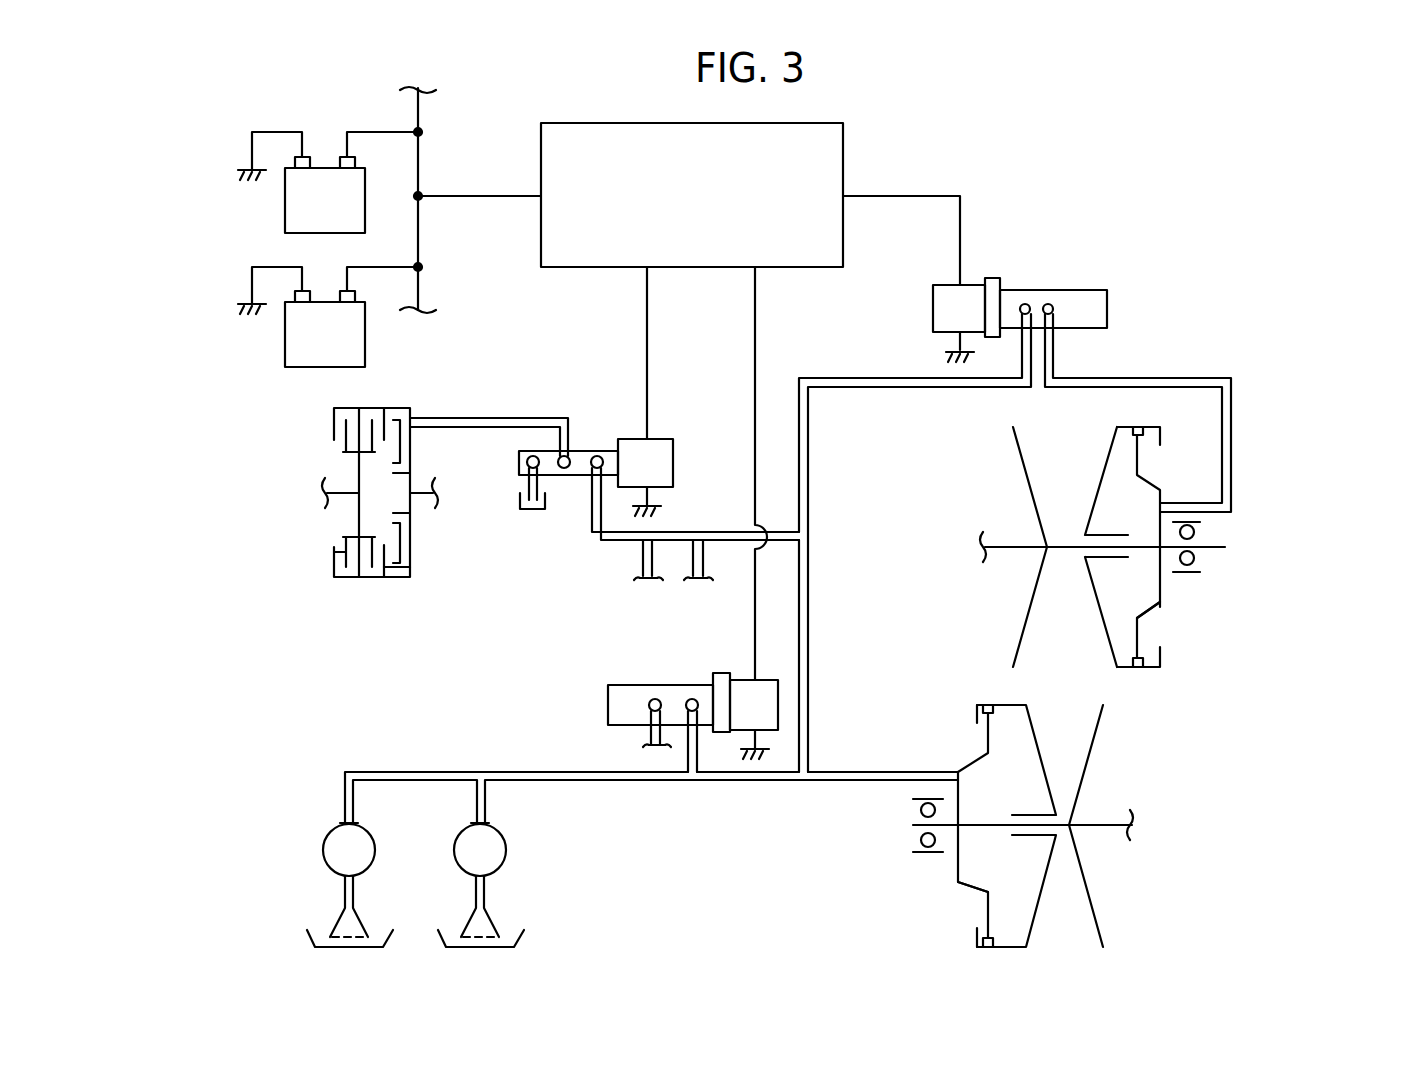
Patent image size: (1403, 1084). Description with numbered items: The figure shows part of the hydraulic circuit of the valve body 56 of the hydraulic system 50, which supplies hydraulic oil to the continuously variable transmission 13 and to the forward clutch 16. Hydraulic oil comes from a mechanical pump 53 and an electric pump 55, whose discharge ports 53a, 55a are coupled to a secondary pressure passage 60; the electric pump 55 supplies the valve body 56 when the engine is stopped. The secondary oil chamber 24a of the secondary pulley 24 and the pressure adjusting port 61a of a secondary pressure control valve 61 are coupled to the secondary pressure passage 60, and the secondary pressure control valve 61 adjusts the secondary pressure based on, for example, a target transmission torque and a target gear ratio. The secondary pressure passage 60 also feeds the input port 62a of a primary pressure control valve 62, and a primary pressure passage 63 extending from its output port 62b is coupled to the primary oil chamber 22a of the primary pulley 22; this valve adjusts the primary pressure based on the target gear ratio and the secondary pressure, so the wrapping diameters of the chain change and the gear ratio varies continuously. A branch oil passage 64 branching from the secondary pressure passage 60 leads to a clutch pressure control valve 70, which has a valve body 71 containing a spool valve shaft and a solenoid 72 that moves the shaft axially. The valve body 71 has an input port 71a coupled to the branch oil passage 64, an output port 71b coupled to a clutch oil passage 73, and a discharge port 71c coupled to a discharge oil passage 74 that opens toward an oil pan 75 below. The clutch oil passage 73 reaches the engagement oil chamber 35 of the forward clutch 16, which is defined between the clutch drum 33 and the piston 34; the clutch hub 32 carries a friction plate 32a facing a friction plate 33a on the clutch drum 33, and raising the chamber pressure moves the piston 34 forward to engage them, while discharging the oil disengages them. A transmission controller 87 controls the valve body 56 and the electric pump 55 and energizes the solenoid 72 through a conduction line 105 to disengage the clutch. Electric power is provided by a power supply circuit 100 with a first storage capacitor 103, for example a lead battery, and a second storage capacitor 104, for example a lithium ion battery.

The continuously variable transmission 13 is at (1185, 852).
The forward clutch 16 is at (333, 430).
The primary pulley 22 is at (1208, 582).
The primary oil chamber 22a is at (1140, 610).
The secondary pulley 24 is at (1108, 776).
The secondary oil chamber 24a is at (975, 880).
The clutch hub 32 is at (357, 470).
The friction plate 32a is at (335, 552).
The clutch drum 33 is at (362, 580).
The friction plate 33a is at (333, 571).
The piston 34 is at (392, 578).
The engagement oil chamber 35 is at (398, 406).
The hydraulic system 50 is at (1280, 178).
The mechanical pump 53 is at (322, 850).
The discharge port 53a is at (347, 822).
The electric pump 55 is at (506, 850).
The discharge port 55a is at (477, 822).
The valve body 56 is at (1083, 205).
The secondary pressure passage 60 is at (810, 600).
The secondary pressure control valve 61 is at (605, 690).
The pressure adjusting port 61a is at (691, 697).
The primary pressure control valve 62 is at (1108, 300).
The input port 62a is at (1025, 303).
The output port 62b is at (1048, 303).
The primary pressure passage 63 is at (1232, 430).
The branch oil passage 64 is at (620, 541).
The clutch pressure control valve 70 is at (663, 437).
The valve body 71 is at (575, 450).
The input port 71a is at (597, 456).
The output port 71b is at (565, 472).
The discharge port 71c is at (527, 462).
The solenoid 72 is at (675, 465).
The clutch oil passage 73 is at (518, 417).
The discharge oil passage 74 is at (527, 483).
The oil pan 75 is at (525, 510).
The transmission controller 87 is at (845, 134).
The power supply circuit 100 is at (227, 138).
The first storage capacitor 103 is at (285, 200).
The second storage capacitor 104 is at (285, 333).
The conduction line 105 is at (647, 326).